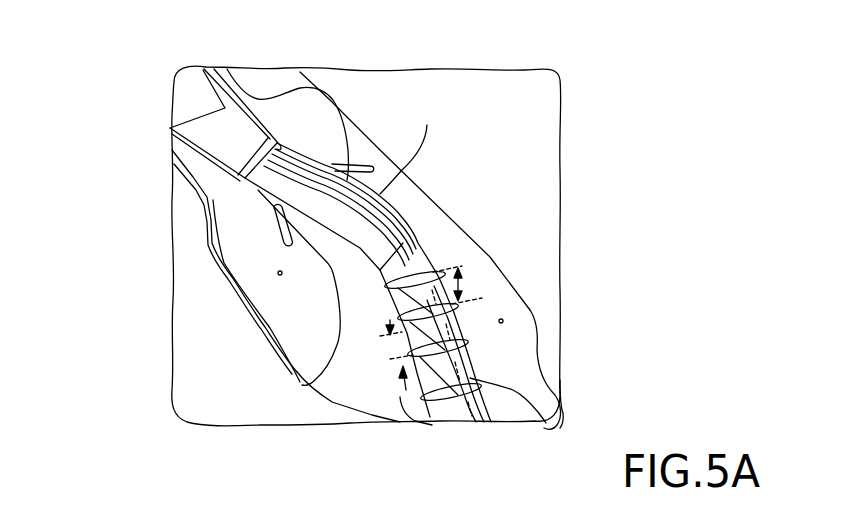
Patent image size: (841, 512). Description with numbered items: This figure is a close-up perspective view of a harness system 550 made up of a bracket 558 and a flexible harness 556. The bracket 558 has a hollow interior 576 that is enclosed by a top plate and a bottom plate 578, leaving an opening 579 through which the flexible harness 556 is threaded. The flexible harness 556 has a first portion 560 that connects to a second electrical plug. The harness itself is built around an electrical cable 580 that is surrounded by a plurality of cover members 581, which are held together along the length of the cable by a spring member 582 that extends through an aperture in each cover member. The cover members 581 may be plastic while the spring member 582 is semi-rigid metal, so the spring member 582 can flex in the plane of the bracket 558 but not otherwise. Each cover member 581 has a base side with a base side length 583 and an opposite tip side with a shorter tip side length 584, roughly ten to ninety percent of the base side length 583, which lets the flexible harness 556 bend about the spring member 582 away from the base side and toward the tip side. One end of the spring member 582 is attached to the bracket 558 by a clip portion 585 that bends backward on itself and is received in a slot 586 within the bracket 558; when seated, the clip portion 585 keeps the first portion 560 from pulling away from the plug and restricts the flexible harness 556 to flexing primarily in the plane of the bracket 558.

The harness system 550 is at (143, 97).
The flexible harness 556 is at (385, 308).
The bracket 558 is at (452, 243).
The first portion 560 is at (297, 186).
The hollow interior 576 is at (352, 377).
The bottom plate 578 is at (406, 393).
The opening 579 is at (356, 391).
The electrical cable 580 is at (276, 177).
The cover members 581 is at (445, 332).
The spring member 582 is at (427, 125).
The base side length 583 is at (465, 298).
The tip side length 584 is at (388, 318).
The clip portion 585 is at (343, 165).
The slot 586 is at (358, 202).